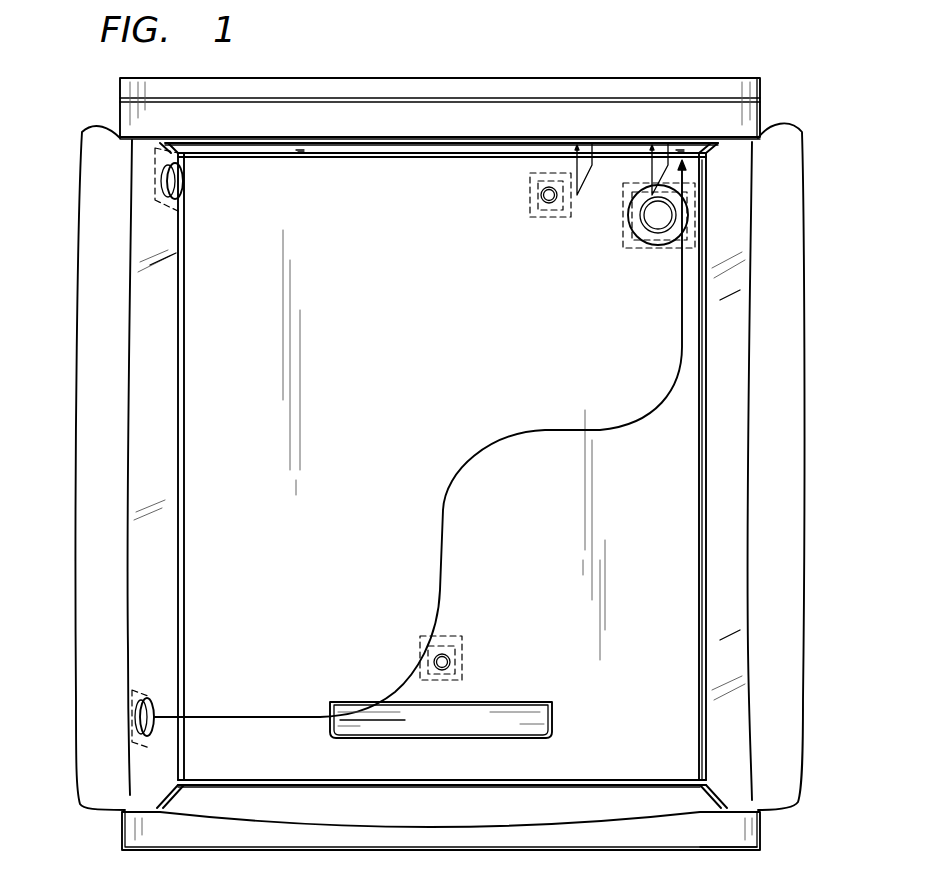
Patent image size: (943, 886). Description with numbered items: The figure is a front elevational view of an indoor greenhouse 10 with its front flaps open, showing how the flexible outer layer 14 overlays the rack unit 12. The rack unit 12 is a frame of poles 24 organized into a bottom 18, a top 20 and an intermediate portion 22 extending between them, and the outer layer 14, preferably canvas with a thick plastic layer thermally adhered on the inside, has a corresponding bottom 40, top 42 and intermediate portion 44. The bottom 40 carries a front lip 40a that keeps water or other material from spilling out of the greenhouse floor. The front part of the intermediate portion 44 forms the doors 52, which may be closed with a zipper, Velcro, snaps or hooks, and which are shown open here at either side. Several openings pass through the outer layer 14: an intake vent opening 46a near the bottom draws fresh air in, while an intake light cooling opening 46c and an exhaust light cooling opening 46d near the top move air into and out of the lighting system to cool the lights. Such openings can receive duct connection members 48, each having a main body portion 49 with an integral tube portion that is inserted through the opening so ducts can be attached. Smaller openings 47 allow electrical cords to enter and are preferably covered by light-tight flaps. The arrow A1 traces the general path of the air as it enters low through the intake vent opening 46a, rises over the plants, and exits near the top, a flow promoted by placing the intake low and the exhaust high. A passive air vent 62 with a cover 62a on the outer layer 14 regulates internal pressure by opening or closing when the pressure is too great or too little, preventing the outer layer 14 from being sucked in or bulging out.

The indoor greenhouse 10 is at (757, 66).
The rack unit 12 is at (183, 383).
The outer layer 14 is at (487, 365).
The bottom 18 is at (603, 782).
The top 20 is at (357, 150).
The intermediate portion 22 is at (697, 440).
The pole 24 is at (697, 580).
The bottom 40 is at (463, 812).
The front lip 40a is at (715, 843).
The top 42 is at (578, 86).
The intermediate portion 44 is at (162, 493).
The intake vent opening 46a is at (168, 708).
The intake light cooling opening 46c is at (193, 183).
The exhaust light cooling opening 46d is at (620, 240).
The opening for electrical cords 47 is at (545, 200).
The duct connection member 48 is at (181, 196).
The main body portion 49 is at (300, 868).
The doors 52 is at (85, 462).
The passive air vent 62 is at (528, 704).
The cover 62a is at (461, 729).
The arrow A1 is at (447, 500).